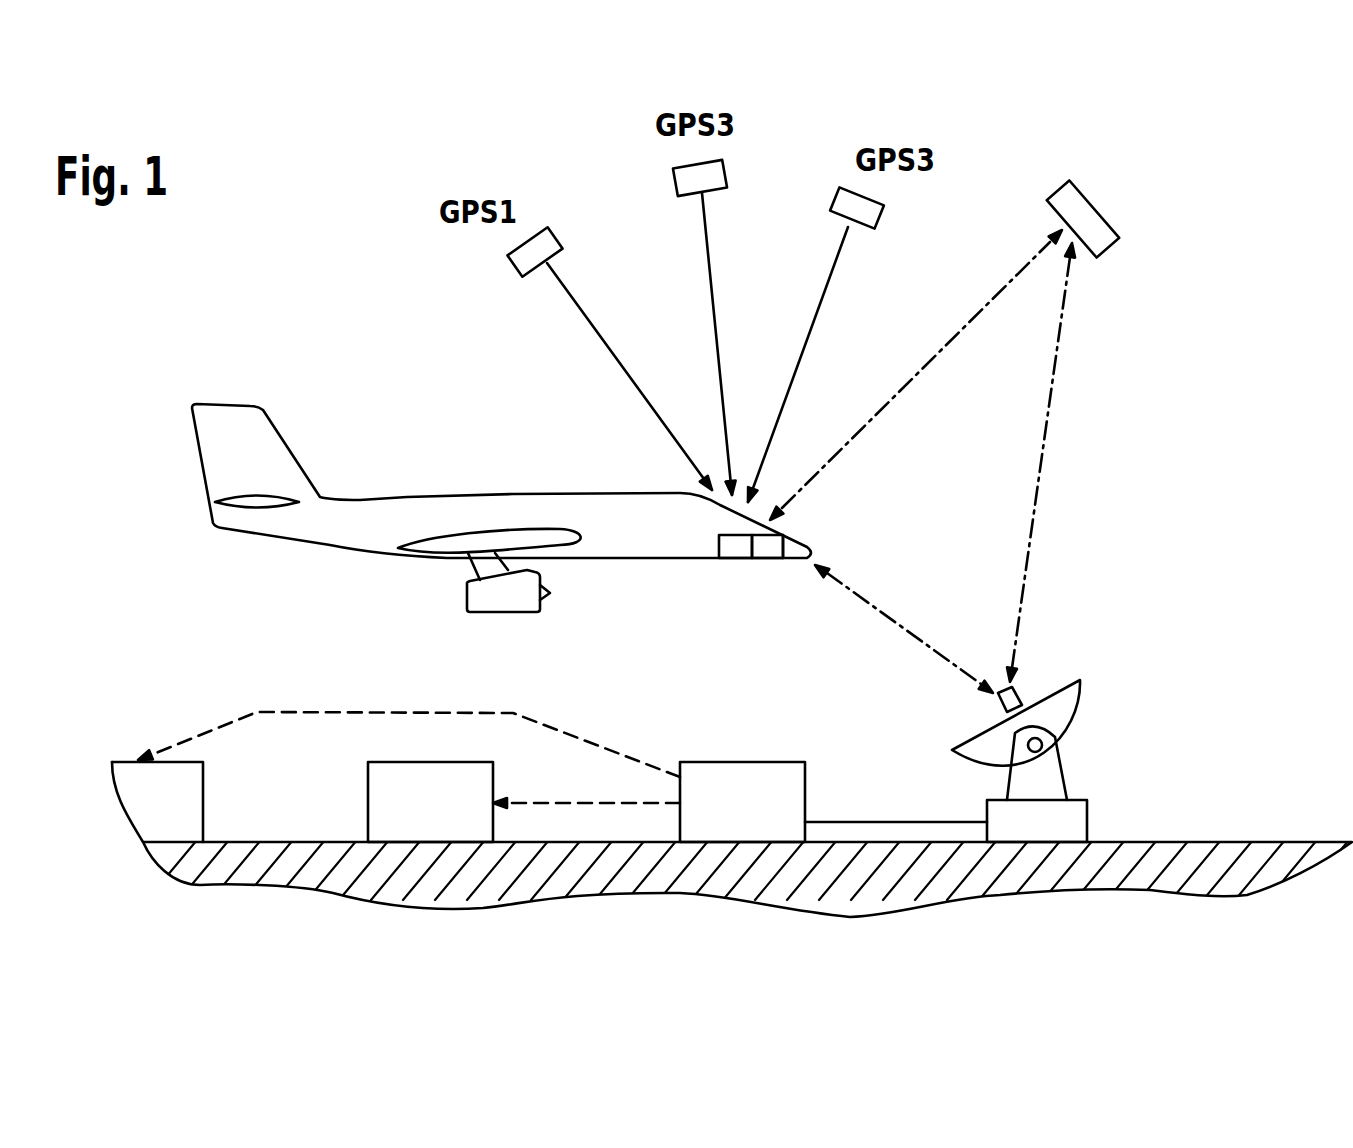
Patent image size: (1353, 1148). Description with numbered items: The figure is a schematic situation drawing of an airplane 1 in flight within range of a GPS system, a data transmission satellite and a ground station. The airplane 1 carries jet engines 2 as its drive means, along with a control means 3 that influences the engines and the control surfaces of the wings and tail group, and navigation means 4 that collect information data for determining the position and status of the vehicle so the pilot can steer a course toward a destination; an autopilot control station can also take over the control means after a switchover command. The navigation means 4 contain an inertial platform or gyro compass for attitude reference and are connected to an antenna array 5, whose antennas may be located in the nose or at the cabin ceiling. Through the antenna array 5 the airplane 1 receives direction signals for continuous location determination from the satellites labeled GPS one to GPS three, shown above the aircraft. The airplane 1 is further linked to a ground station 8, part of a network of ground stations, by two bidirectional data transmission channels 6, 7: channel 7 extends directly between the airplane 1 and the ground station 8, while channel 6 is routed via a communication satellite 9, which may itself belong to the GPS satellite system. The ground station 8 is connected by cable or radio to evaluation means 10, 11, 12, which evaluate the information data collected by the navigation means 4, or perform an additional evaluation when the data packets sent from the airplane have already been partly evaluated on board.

The airplane 1 is at (373, 513).
The jet engines 2 is at (523, 597).
The control means 3 is at (733, 550).
The navigation means 4 is at (767, 550).
The antenna array 5 is at (797, 550).
The bidirectional data transmission channel 6 is at (943, 353).
The bidirectional data transmission channel 7 is at (880, 607).
The ground station 8 is at (1040, 777).
The communication satellite 9 is at (1082, 212).
The evaluation means 10 is at (792, 800).
The evaluation means 11 is at (385, 790).
The evaluation means 12 is at (175, 803).